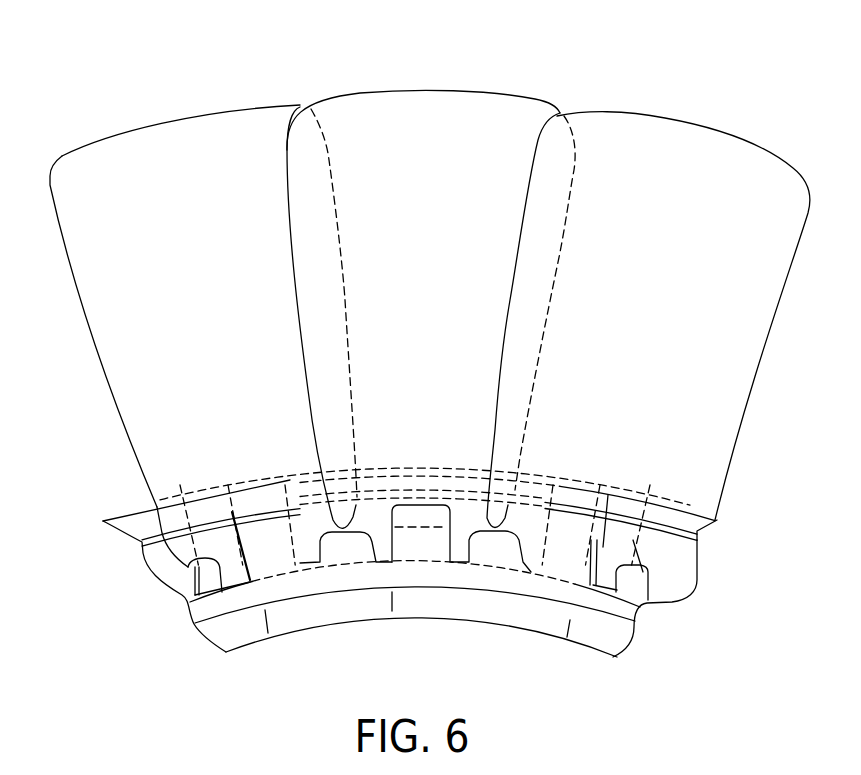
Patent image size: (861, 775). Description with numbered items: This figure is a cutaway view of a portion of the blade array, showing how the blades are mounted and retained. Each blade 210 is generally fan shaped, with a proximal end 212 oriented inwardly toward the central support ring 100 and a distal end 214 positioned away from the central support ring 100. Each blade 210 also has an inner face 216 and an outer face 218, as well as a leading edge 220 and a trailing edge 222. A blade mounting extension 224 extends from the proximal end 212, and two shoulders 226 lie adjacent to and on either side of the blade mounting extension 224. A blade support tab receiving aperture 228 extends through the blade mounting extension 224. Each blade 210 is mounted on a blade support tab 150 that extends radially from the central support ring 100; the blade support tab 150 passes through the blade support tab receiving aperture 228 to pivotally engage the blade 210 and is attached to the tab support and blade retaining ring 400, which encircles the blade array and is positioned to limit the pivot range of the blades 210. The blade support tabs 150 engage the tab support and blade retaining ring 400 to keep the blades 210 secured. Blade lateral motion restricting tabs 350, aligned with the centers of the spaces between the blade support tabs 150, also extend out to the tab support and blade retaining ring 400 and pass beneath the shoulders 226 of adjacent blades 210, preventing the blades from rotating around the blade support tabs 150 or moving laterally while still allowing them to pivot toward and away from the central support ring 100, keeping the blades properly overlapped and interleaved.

The central support ring 100 is at (228, 632).
The blade support tab 150 is at (278, 567).
The blade 210 is at (187, 228).
The proximal end 212 is at (252, 496).
The distal end 214 is at (245, 115).
The inner face 216 is at (647, 225).
The outer face 218 is at (757, 128).
The leading edge 220 is at (120, 417).
The trailing edge 222 is at (330, 147).
The blade mounting extension 224 is at (423, 555).
The shoulders 226 is at (355, 508).
The blade support tab receiving aperture 228 is at (557, 540).
The blade lateral motion restricting tab 350 is at (642, 580).
The tab support and blade retaining ring 400 is at (697, 530).